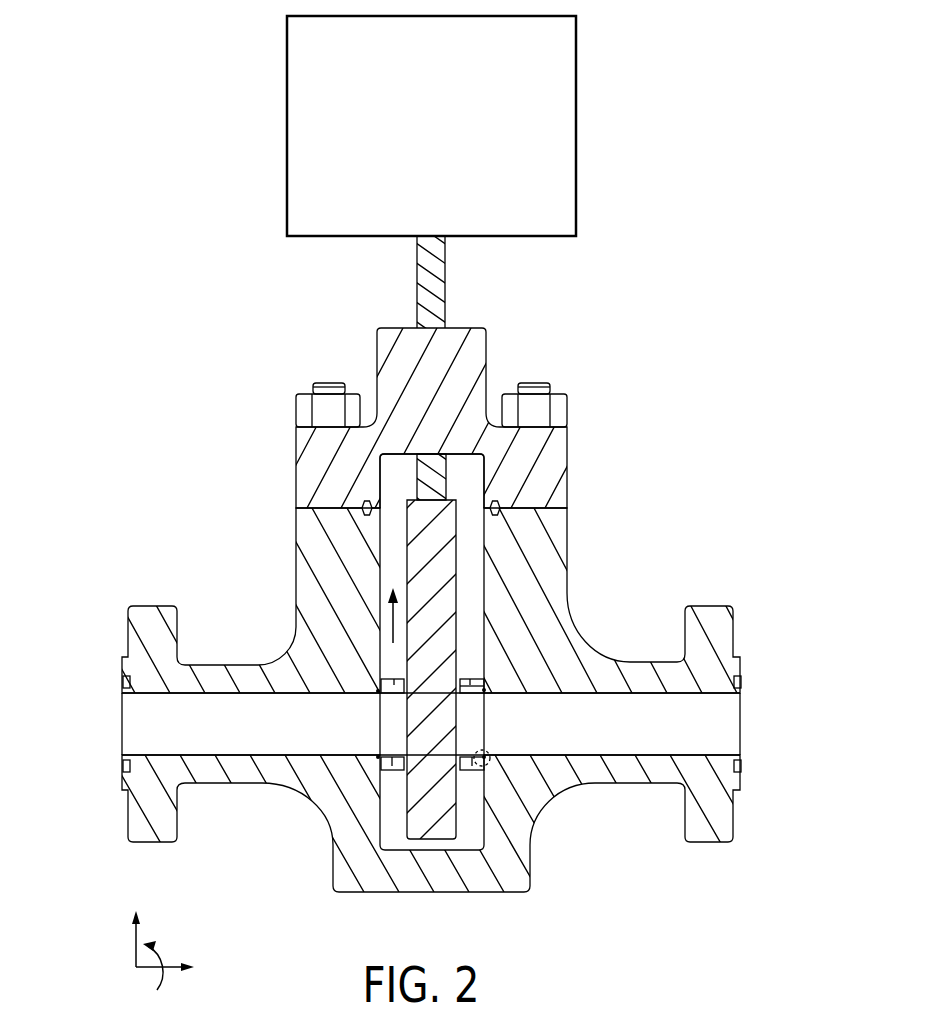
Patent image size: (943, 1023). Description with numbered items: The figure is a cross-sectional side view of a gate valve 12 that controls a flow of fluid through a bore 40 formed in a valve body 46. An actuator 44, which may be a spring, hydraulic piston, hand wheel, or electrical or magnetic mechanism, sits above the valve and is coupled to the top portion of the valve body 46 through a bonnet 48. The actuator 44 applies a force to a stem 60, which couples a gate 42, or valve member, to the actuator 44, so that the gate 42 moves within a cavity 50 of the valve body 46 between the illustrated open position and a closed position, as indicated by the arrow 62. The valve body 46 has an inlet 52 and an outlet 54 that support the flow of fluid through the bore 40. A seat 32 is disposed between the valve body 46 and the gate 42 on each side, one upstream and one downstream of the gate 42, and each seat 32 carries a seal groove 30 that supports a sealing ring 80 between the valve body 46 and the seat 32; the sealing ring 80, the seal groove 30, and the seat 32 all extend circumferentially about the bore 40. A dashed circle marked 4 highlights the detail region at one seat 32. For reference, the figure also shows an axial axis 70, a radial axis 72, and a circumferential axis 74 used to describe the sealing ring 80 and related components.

The detail section indicator 4 is at (487, 752).
The gate valve 12 is at (667, 330).
The seal groove 30 is at (378, 690).
The seat 32 is at (392, 766).
The bore 40 is at (268, 732).
The gate 42 is at (462, 548).
The actuator 44 is at (576, 44).
The valve body 46 is at (568, 592).
The bonnet 48 is at (532, 440).
The cavity 50 is at (462, 470).
The inlet 52 is at (122, 742).
The outlet 54 is at (740, 714).
The stem 60 is at (445, 288).
The arrow 62 is at (390, 622).
The axial axis 70 is at (162, 972).
The radial axis 72 is at (135, 947).
The circumferential axis 74 is at (172, 950).
The sealing ring 80 is at (485, 689).